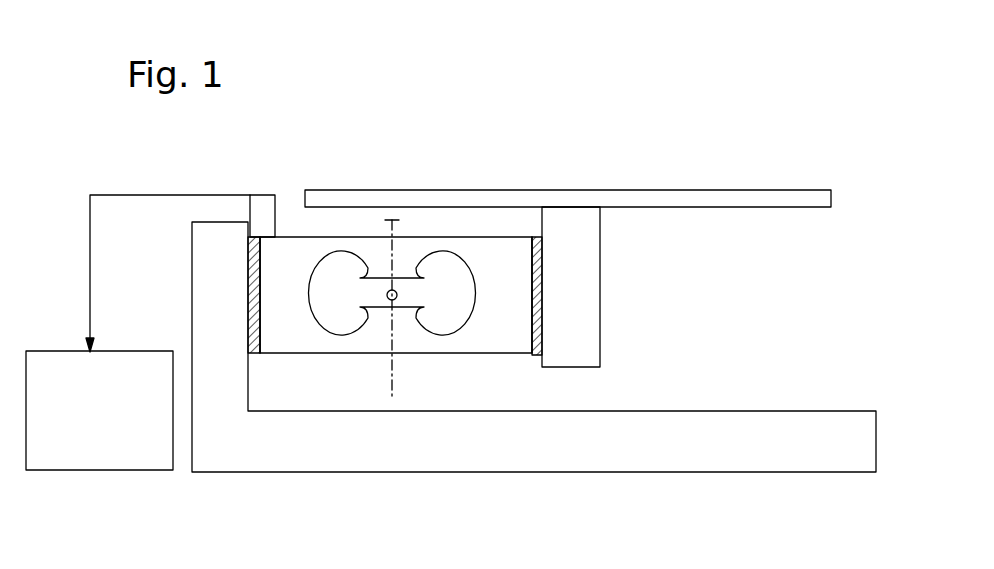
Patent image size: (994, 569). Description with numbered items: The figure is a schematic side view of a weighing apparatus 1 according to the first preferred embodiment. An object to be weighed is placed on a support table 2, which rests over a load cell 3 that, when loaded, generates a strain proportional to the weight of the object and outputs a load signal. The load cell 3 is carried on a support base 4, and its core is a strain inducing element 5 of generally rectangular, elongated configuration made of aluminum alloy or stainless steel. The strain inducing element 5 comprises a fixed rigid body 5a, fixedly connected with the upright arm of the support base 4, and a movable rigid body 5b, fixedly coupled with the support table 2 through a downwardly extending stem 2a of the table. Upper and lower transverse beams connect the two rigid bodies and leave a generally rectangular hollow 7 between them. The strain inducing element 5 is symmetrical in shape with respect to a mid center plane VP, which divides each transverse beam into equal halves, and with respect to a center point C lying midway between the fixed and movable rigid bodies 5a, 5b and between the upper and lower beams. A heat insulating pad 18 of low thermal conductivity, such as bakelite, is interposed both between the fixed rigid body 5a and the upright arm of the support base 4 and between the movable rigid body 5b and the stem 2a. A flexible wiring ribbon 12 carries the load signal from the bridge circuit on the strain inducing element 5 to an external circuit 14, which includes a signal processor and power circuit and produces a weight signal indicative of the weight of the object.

The weighing apparatus 1 is at (448, 152).
The support table 2 is at (755, 200).
The stem 2a is at (578, 290).
The load cell 3 is at (279, 186).
The support base 4 is at (273, 445).
The strain inducing element 5 is at (298, 235).
The fixed rigid body 5a is at (292, 340).
The movable rigid body 5b is at (510, 342).
The hollow 7 is at (345, 305).
The flexible wiring ribbon 12 is at (163, 193).
The external circuit 14 is at (97, 445).
The heat insulating pad 18 is at (253, 235).
The center point C is at (396, 296).
The mid center plane VP is at (397, 390).